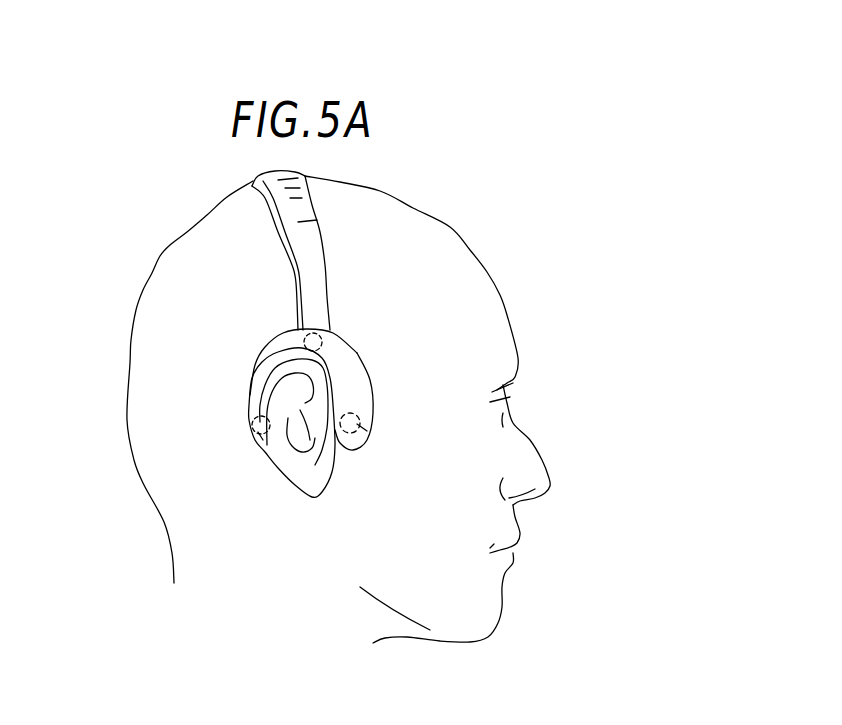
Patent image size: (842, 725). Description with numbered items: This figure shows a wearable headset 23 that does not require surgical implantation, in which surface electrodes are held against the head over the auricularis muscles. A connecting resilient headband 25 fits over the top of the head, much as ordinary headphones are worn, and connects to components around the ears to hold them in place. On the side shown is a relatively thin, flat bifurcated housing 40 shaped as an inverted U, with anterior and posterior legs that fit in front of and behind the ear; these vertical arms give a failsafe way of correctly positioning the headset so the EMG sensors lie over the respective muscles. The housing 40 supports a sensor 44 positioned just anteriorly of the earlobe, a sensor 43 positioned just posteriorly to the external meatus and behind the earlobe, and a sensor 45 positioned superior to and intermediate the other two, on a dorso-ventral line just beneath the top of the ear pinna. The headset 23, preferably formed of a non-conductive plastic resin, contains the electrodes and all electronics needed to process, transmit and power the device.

The headset 23 is at (137, 368).
The resilient headband 25 is at (328, 283).
The bifurcated housing 40 is at (371, 396).
The sensor 43 is at (258, 455).
The sensor 44 is at (373, 443).
The sensor 45 is at (324, 346).